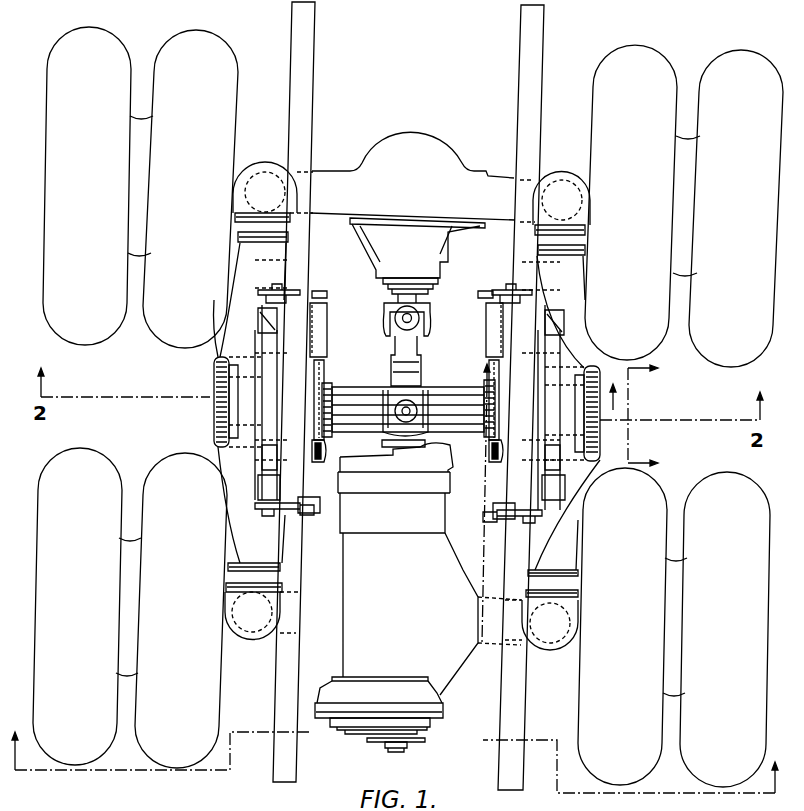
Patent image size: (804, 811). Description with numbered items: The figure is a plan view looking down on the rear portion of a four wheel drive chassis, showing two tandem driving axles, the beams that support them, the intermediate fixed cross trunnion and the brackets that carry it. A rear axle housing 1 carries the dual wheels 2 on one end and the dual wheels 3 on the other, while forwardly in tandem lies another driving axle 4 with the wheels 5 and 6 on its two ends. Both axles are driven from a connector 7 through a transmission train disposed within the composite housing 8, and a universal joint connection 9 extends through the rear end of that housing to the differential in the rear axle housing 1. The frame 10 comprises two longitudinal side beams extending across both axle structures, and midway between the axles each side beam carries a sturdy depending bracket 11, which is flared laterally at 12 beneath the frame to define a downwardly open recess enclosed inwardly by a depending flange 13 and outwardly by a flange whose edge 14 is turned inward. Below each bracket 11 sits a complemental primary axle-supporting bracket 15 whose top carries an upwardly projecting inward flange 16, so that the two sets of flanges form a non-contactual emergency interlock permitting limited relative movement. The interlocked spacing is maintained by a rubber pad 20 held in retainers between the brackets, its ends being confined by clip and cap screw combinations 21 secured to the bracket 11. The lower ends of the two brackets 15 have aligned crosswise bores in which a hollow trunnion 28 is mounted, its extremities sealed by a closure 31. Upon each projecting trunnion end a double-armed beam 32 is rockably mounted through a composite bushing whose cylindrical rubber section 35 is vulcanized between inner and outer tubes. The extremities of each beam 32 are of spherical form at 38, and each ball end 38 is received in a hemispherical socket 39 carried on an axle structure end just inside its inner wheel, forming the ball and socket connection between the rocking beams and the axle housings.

The rear axle housing 1 is at (356, 146).
The dual wheels 2 is at (160, 48).
The dual wheels 3 is at (710, 60).
The driving axle 4 is at (466, 680).
The wheels 5 is at (142, 748).
The wheels 6 is at (690, 754).
The connector 7 is at (410, 752).
The composite housing 8 is at (379, 693).
The universal joint connection 9 is at (395, 350).
The frame 10 is at (312, 32).
The depending bracket 11 is at (258, 468).
The laterally flared portion 12 is at (334, 484).
The depending flange 13 is at (318, 440).
The inwardly flanged edge 14 is at (255, 488).
The primary axle-supporting bracket 15 is at (327, 383).
The inward upwardly projecting flange 16 is at (400, 751).
The rubber pad 20 is at (658, 418).
The clip and cap screw combinations 21 is at (326, 293).
The hollow trunnion 28 is at (368, 392).
The closure 31 is at (212, 388).
The double-armed beam 32 is at (228, 330).
The rubber cylindrical section 35 is at (212, 431).
The spherical beam end 38 is at (263, 176).
The hemispherical socket 39 is at (246, 168).